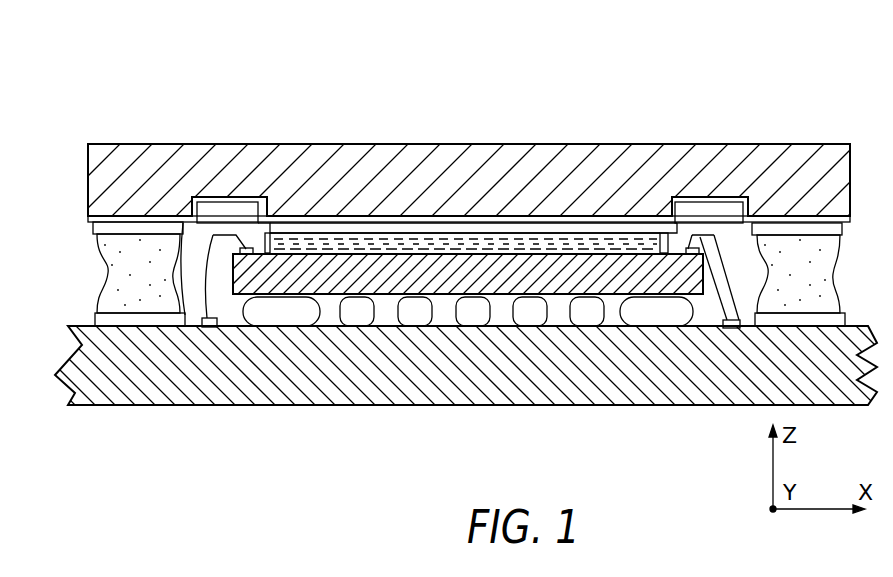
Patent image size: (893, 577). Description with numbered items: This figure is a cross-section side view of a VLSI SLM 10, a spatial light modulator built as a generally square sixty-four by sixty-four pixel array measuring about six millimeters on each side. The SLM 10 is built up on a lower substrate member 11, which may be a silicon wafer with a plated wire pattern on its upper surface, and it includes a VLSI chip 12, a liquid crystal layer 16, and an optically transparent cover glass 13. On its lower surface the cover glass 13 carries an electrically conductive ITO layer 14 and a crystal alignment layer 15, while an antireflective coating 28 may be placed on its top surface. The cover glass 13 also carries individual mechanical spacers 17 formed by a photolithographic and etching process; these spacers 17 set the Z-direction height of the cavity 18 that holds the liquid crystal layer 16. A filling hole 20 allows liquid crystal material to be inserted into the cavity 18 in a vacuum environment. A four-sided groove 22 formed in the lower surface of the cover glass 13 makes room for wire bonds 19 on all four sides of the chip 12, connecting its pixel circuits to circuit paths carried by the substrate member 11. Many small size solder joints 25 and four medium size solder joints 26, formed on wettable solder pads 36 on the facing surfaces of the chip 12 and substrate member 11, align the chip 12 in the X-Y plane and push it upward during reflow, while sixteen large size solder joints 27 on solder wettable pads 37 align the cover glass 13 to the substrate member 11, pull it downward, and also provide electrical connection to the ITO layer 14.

The VLSI SLM 10 is at (583, 138).
The lower substrate member 11 is at (413, 392).
The VLSI chip 12 is at (237, 283).
The cover glass 13 is at (200, 144).
The ITO layer 14 is at (118, 213).
The crystal alignment layer 15 is at (433, 230).
The liquid crystal layer 16 is at (345, 247).
The mechanical spacers 17 is at (270, 245).
The cavity 18 is at (493, 247).
The wire bonds 19 is at (205, 256).
The filling hole 20 is at (247, 162).
The four-sided groove 22 is at (176, 200).
The small size solder joints 25 is at (362, 312).
The medium size solder joints 26 is at (250, 305).
The large size solder joints 27 is at (130, 292).
The antireflective coating 28 is at (418, 143).
The wettable solder pads 36 is at (264, 436).
The solder wettable pads 37 is at (822, 230).